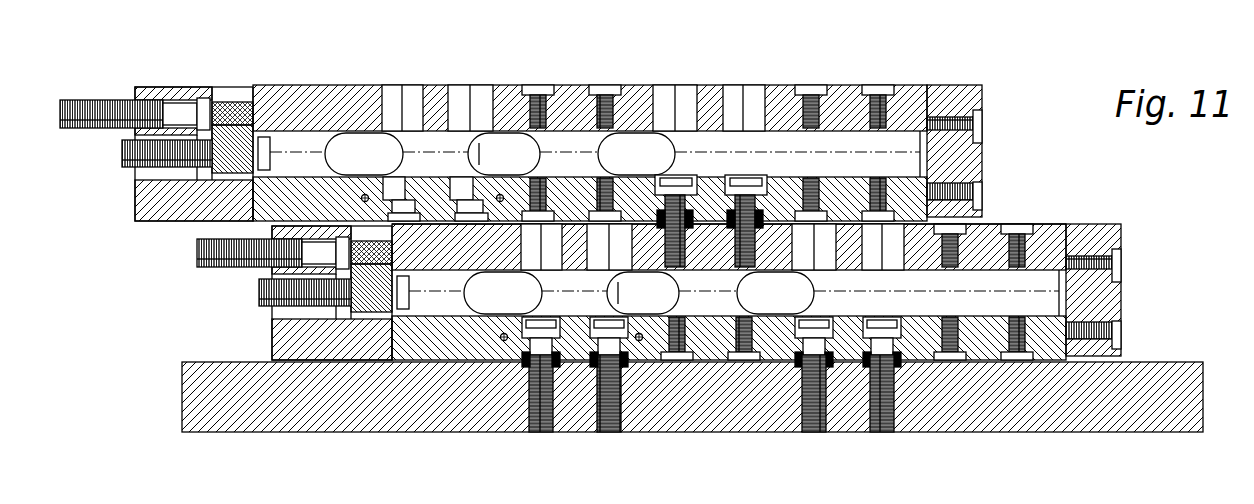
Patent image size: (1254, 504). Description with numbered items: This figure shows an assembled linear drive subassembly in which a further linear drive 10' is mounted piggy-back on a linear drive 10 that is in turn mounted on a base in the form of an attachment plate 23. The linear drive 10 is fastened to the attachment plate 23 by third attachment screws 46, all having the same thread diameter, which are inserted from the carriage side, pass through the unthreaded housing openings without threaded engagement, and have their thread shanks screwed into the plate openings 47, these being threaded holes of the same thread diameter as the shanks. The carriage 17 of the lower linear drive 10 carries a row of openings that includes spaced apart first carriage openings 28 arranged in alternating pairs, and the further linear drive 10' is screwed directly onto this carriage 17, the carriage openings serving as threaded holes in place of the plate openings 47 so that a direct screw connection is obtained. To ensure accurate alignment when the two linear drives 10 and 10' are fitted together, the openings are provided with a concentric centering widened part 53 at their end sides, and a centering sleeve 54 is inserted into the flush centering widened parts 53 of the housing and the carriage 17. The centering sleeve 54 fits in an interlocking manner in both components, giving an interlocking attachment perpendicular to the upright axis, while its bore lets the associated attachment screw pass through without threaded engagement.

The linear drive 10 is at (698, 318).
The further linear drive 10' is at (567, 139).
The carriage 17 is at (1038, 215).
The attachment plate 23 is at (237, 427).
The first carriage openings 28 is at (460, 92).
The third attachment screws 46 is at (527, 426).
The plate openings 47 is at (545, 432).
The centering widened part 53 is at (658, 214).
The centering sleeve 54 is at (727, 213).